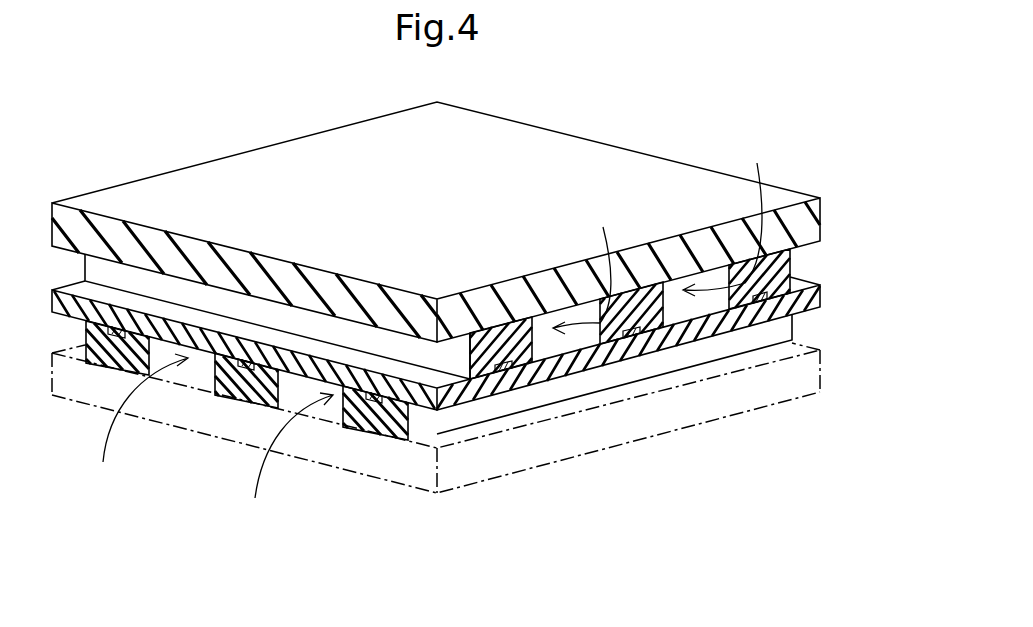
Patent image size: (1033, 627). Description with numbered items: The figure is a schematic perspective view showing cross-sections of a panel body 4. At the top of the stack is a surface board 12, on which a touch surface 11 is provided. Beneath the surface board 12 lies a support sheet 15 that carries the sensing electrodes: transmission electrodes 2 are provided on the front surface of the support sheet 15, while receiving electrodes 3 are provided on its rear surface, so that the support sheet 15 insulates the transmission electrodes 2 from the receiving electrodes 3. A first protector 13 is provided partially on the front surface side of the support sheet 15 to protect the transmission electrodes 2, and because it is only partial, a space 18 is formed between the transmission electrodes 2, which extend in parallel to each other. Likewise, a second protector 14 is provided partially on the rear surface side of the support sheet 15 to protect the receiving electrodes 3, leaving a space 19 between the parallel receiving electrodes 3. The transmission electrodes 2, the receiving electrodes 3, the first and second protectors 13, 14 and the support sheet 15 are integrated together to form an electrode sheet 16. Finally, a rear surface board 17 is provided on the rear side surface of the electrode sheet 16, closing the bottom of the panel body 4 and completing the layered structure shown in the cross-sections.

The panel body 4 is at (673, 75).
The surface board 12 is at (202, 173).
The touch surface 11 is at (480, 220).
The first protector 13 is at (518, 320).
The transmission electrode 2 is at (500, 365).
The space 18 is at (657, 228).
The support sheet 15 is at (613, 363).
The second protector 14 is at (225, 395).
The receiving electrode 3 is at (248, 368).
The space 19 is at (207, 448).
The electrode sheet 16 is at (825, 312).
The rear surface board 17 is at (500, 480).